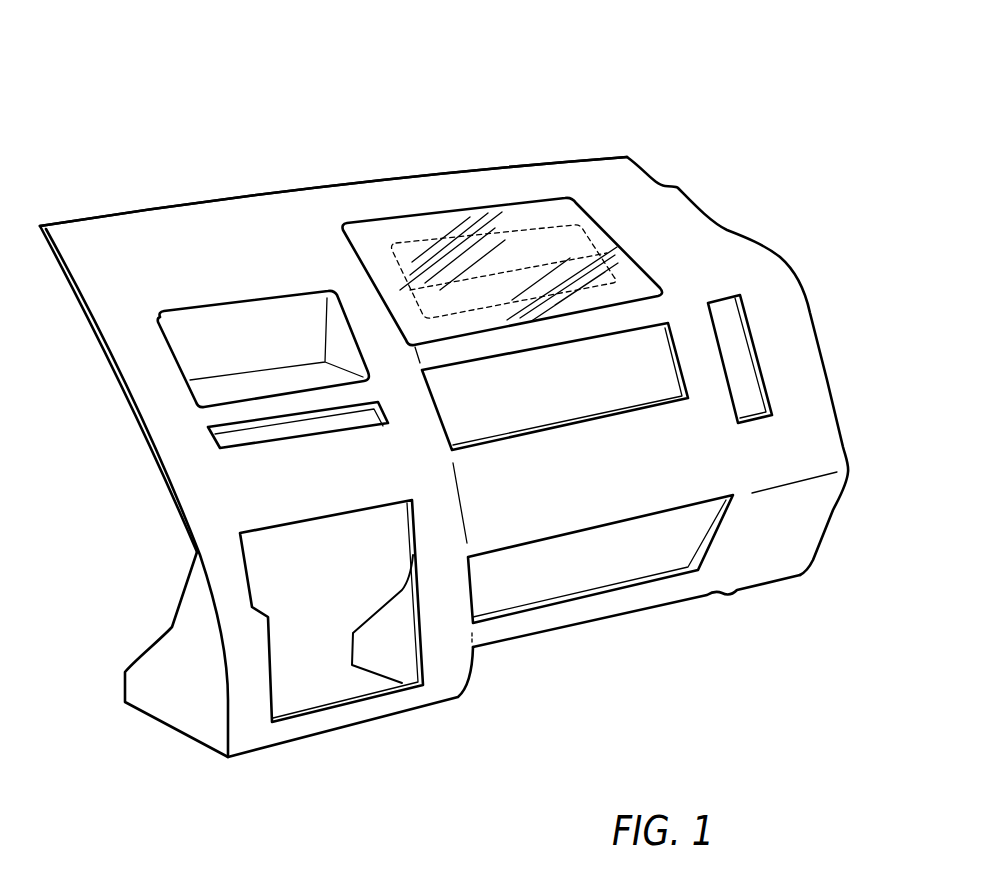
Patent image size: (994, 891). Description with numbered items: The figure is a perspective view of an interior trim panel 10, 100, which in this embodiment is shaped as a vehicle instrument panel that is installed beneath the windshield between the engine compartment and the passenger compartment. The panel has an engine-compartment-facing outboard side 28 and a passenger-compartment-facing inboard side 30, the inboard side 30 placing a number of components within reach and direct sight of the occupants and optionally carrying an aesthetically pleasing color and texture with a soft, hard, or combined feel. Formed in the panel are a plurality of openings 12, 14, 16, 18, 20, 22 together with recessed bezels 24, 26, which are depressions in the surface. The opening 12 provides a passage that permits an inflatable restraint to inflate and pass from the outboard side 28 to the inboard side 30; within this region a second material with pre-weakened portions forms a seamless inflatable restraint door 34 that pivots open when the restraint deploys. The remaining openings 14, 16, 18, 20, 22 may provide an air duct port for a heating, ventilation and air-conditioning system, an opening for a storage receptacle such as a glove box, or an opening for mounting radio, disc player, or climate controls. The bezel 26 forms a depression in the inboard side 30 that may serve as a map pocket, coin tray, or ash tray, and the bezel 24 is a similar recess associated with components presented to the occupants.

The interior trim panel 10 is at (444, 378).
The interior trim panel 100 is at (175, 70).
The opening 12 is at (542, 212).
The opening 14 is at (625, 363).
The opening 16 is at (730, 340).
The opening 18 is at (633, 542).
The opening 20 is at (315, 660).
The opening 22 is at (238, 433).
The recessed bezel 24 is at (630, 273).
The recessed bezel 26 is at (229, 354).
The outboard side 28 is at (63, 290).
The inboard side 30 is at (195, 266).
The inflatable restraint door 34 is at (501, 271).